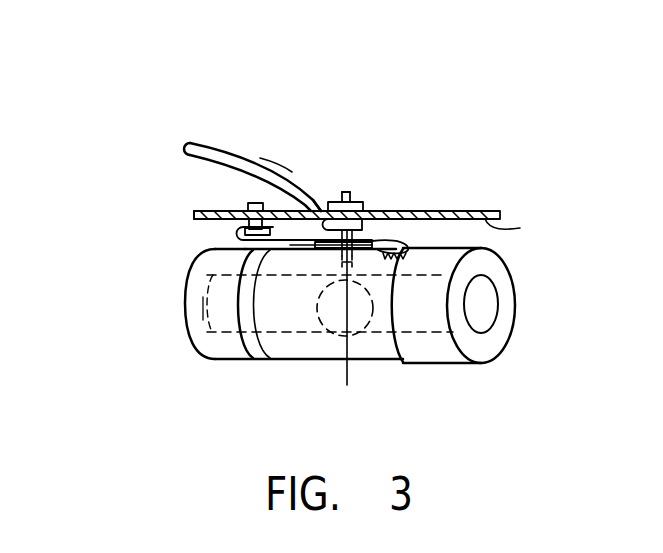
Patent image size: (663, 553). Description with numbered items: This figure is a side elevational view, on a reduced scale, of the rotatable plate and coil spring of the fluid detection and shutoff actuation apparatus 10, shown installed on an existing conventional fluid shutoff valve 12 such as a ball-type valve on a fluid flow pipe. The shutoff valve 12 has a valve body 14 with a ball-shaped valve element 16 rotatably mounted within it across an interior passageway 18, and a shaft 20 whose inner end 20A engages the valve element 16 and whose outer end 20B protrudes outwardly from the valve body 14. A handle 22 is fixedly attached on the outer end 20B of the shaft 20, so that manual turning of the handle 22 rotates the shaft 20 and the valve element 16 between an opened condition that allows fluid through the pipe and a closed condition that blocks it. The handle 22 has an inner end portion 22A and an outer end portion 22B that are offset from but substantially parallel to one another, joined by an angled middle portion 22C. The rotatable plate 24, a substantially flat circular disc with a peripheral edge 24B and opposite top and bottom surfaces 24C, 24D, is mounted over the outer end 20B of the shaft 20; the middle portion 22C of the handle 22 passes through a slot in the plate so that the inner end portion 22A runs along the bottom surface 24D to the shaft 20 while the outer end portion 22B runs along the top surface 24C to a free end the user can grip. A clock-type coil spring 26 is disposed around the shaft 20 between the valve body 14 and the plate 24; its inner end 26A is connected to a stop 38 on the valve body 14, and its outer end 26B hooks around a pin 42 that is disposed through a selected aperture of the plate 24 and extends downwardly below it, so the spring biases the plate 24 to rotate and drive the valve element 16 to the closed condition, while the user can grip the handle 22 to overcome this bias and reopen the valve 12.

The fluid detection and shutoff actuation apparatus 10 is at (466, 107).
The fluid shutoff valve 12 is at (296, 364).
The valve body 14 is at (403, 362).
The valve element 16 is at (372, 330).
The interior passageway 18 is at (214, 306).
The shaft 20 is at (360, 201).
The inner end of the shaft 20A is at (318, 246).
The outer end of the shaft 20B is at (348, 191).
The handle 22 is at (225, 146).
The inner end portion of the handle 22A is at (201, 143).
The outer end portion of the handle 22B is at (278, 165).
The middle portion of the handle 22C is at (324, 200).
The rotatable plate 24 is at (462, 217).
The peripheral edge 24B is at (196, 214).
The top surface 24C is at (420, 207).
The bottom surface 24D is at (520, 228).
The coil spring 26 is at (186, 291).
The inner end of the coil spring 26A is at (390, 252).
The outer end of the coil spring 26B is at (237, 236).
The stop 38 is at (390, 258).
The pin 42 is at (247, 204).